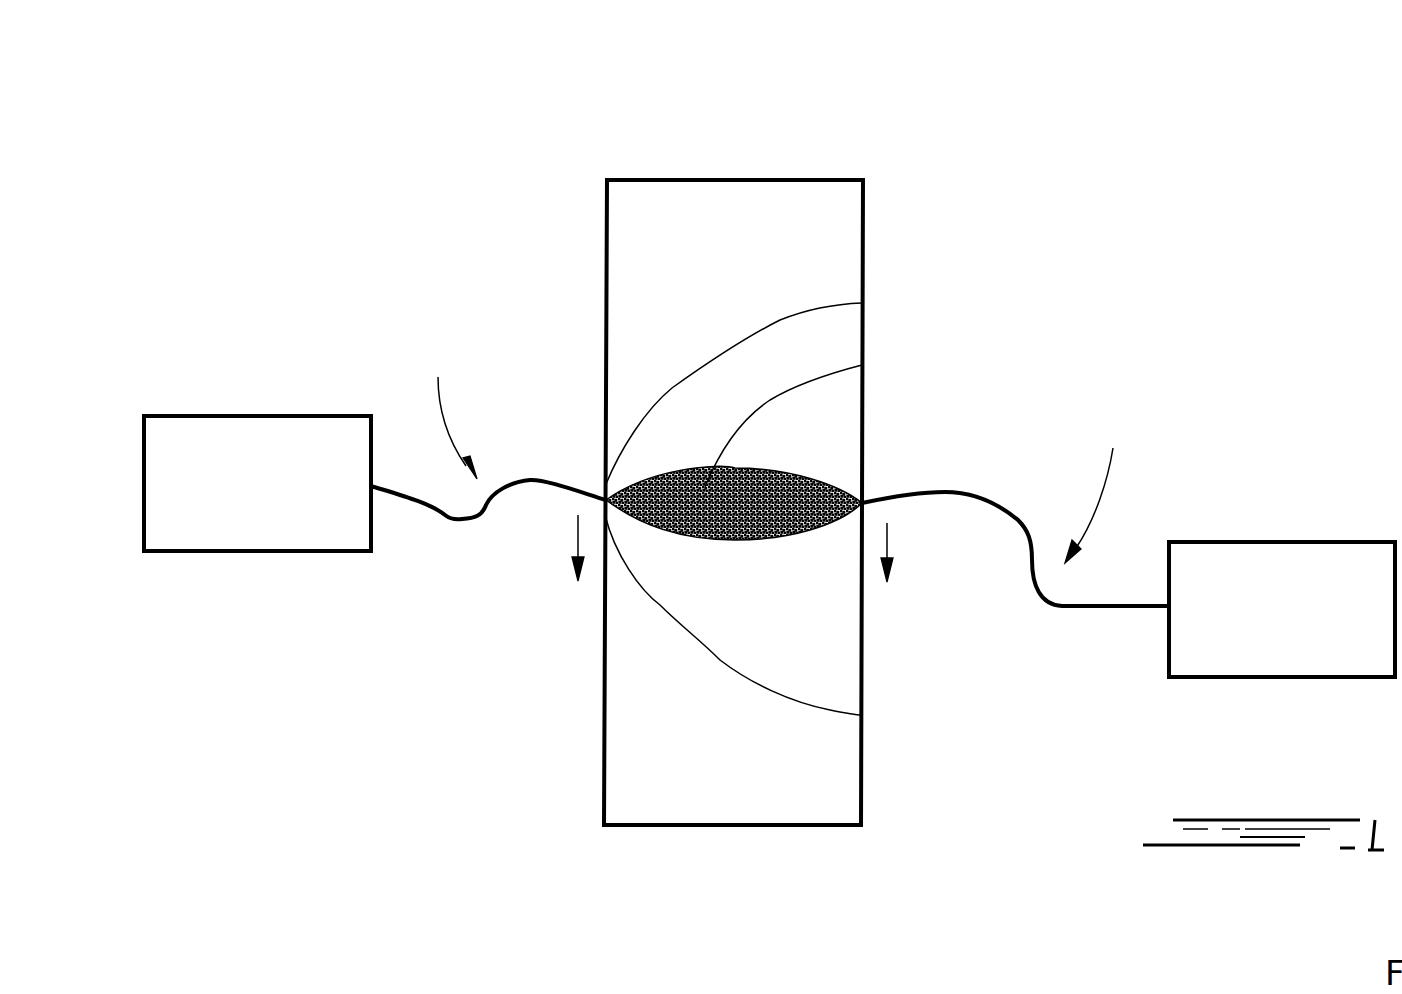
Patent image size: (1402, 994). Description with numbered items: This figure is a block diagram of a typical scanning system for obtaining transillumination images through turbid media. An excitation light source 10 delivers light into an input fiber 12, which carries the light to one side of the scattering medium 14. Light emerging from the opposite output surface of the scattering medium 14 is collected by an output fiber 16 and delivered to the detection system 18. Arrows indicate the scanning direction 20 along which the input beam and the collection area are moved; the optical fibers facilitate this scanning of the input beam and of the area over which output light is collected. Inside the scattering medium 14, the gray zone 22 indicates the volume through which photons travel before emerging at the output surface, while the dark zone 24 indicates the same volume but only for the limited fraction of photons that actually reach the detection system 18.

The excitation light source 10 is at (238, 428).
The input fiber 12 is at (566, 479).
The scattering medium 14 is at (740, 206).
The output fiber 16 is at (975, 492).
The detection system 18 is at (1340, 558).
The scanning direction 20 is at (578, 535).
The gray zone 22 is at (822, 328).
The dark zone 24 is at (862, 365).